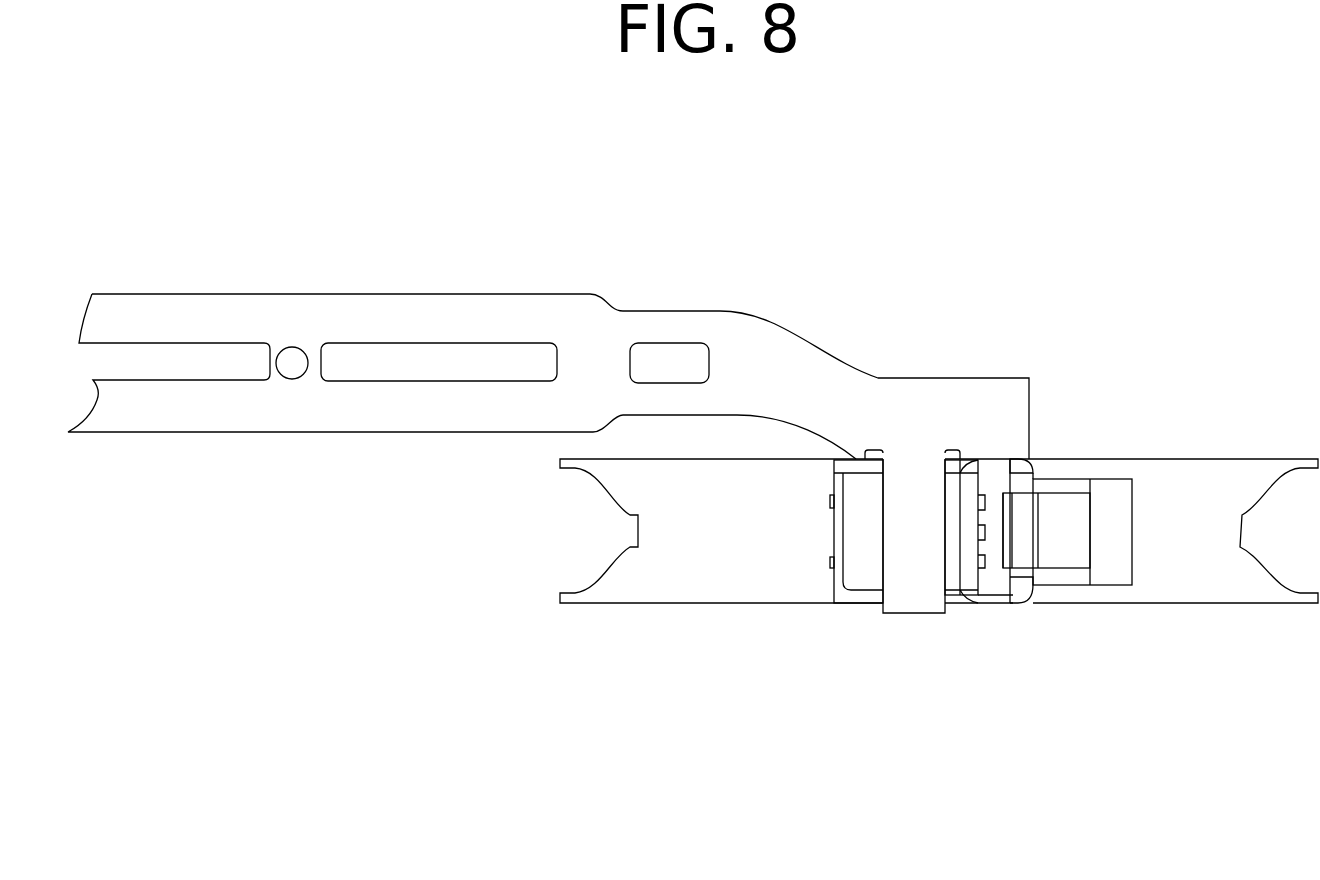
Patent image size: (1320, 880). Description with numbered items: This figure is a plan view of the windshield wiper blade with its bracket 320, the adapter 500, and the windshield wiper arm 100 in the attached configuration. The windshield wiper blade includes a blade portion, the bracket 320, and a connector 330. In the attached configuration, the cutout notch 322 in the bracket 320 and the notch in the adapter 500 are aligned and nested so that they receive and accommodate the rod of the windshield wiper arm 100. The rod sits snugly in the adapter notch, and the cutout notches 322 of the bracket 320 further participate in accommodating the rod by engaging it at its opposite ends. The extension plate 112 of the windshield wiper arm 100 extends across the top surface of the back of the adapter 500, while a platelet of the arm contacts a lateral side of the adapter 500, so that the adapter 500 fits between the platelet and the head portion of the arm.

The windshield wiper arm 100 is at (755, 343).
The extension plate 112 is at (917, 598).
The bracket 320 is at (721, 587).
The cutout notch 322 is at (1002, 608).
The connector 330 is at (1182, 587).
The adapter 500 is at (1109, 500).